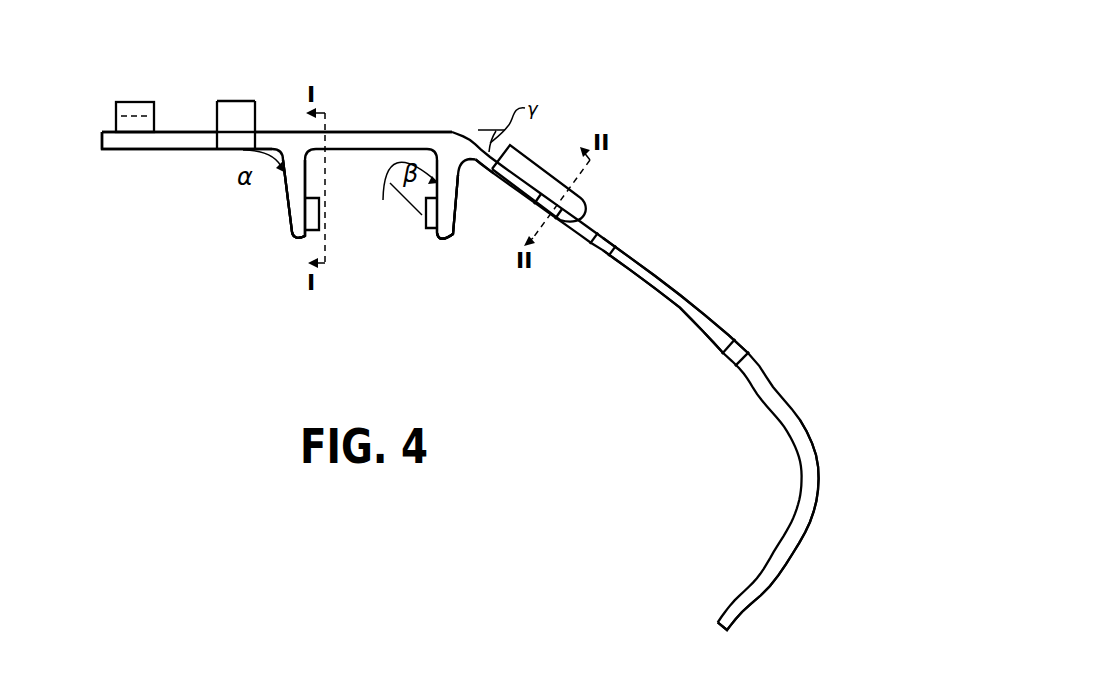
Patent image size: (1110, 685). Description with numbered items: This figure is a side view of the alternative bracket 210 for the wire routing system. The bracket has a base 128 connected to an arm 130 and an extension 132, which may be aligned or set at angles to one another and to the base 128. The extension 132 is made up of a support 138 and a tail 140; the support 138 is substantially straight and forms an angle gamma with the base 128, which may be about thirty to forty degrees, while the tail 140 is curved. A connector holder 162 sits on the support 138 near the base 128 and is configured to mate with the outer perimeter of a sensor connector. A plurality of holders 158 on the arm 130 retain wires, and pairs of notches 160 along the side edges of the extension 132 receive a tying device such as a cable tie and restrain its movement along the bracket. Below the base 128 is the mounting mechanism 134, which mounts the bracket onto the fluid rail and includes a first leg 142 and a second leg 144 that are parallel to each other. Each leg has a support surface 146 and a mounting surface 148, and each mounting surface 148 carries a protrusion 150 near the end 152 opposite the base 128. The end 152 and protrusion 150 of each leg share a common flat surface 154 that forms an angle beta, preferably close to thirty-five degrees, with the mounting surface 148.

The base 128 is at (412, 136).
The arm 130 is at (188, 137).
The extension 132 is at (707, 315).
The mounting mechanism 134 is at (108, 230).
The support 138 is at (653, 283).
The tail 140 is at (782, 572).
The first leg 142 is at (300, 228).
The second leg 144 is at (457, 235).
The support surface 146 is at (287, 212).
The mounting surface 148 is at (306, 172).
The protrusion 150 is at (424, 218).
The end 152 is at (292, 246).
The common flat surface 154 is at (303, 238).
The holder 158 is at (134, 113).
The notch 160 is at (607, 242).
The connector holder 162 is at (541, 172).
The alternative bracket 210 is at (598, 383).